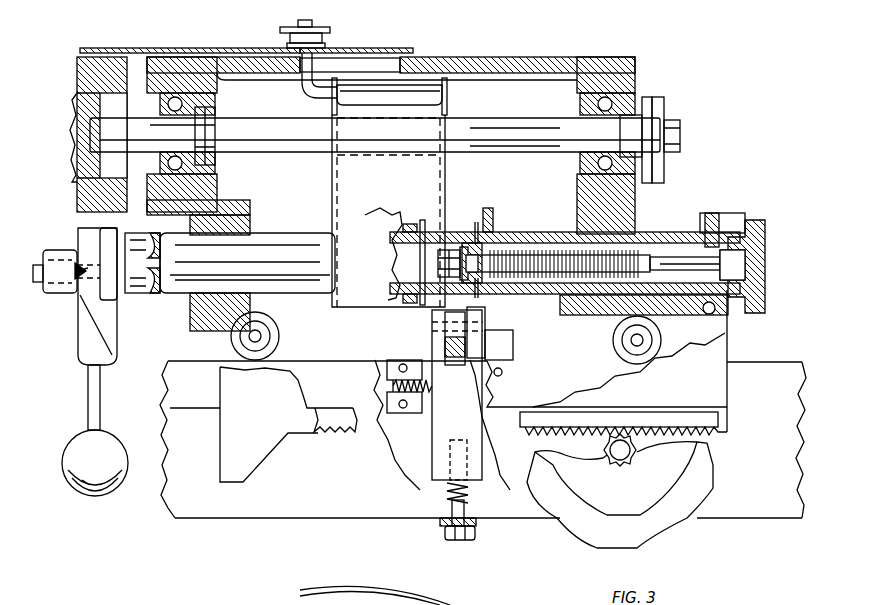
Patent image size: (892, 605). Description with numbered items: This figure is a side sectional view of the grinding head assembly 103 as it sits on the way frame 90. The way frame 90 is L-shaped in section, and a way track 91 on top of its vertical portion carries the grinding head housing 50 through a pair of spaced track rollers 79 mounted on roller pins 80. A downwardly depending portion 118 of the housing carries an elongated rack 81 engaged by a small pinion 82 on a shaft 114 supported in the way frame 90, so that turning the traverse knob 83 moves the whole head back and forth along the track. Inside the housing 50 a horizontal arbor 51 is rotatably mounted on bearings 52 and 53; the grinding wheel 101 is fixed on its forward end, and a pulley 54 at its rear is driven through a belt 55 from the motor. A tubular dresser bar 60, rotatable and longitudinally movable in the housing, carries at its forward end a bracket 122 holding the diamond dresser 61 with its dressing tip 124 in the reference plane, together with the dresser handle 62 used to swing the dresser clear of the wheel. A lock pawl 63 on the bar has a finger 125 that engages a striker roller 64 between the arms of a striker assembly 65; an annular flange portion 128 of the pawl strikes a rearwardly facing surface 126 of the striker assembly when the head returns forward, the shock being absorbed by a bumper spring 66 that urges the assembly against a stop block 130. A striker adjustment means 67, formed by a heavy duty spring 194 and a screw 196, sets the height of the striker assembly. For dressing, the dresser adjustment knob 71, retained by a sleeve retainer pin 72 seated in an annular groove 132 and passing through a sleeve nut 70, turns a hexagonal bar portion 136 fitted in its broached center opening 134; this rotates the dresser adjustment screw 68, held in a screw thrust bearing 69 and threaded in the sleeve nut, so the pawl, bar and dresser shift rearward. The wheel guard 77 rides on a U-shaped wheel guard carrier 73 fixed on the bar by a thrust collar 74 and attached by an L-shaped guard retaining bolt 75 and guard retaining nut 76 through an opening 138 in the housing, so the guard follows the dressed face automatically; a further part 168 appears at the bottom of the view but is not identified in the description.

The grinding head housing 50 is at (452, 57).
The arbor 51 is at (478, 118).
The bearing 52 is at (200, 163).
The bearing 53 is at (583, 168).
The pulley 54 is at (658, 100).
The belt 55 is at (657, 183).
The dresser bar 60 is at (133, 293).
The diamond dresser 61 is at (80, 255).
The dresser handle 62 is at (88, 495).
The lock pawl 63 is at (442, 212).
The striker roller 64 is at (432, 322).
The striker assembly 65 is at (432, 432).
The bumper spring 66 is at (390, 412).
The striker adjustment means 67 is at (466, 539).
The dresser adjustment screw 68 is at (536, 255).
The screw thrust bearing 69 is at (494, 225).
The sleeve nut 70 is at (600, 282).
The dresser adjustment knob 71 is at (750, 218).
The sleeve retainer pin 72 is at (712, 213).
The wheel guard carrier 73 is at (332, 197).
The thrust collar 74 is at (403, 303).
The guard retaining bolt 75 is at (302, 86).
The guard retaining nut 76 is at (288, 30).
The wheel guard 77 is at (118, 46).
The track rollers 79 is at (262, 338).
The roller pins 80 is at (262, 324).
The rack 81 is at (724, 432).
The pinion 82 is at (603, 456).
The traverse knob 83 is at (655, 535).
The way frame 90 is at (740, 518).
The way track 91 is at (808, 365).
The grinding wheel 101 is at (80, 65).
The grinding head assembly 103 is at (582, 50).
The shaft 114 is at (621, 460).
The downwardly depending portion 118 is at (258, 475).
The bracket 122 is at (78, 340).
The dressing tip 124 is at (85, 275).
The finger 125 is at (445, 345).
The rearwardly facing surface 126 is at (485, 310).
The annular flange portion 128 is at (513, 333).
The stop block 130 is at (505, 372).
The annular groove 132 is at (752, 293).
The broached center opening 134 is at (745, 265).
The bar portion 136 is at (733, 266).
The opening 138 is at (398, 62).
The drum 168 is at (322, 600).
The heavy duty spring 194 is at (448, 492).
The screw 196 is at (455, 505).